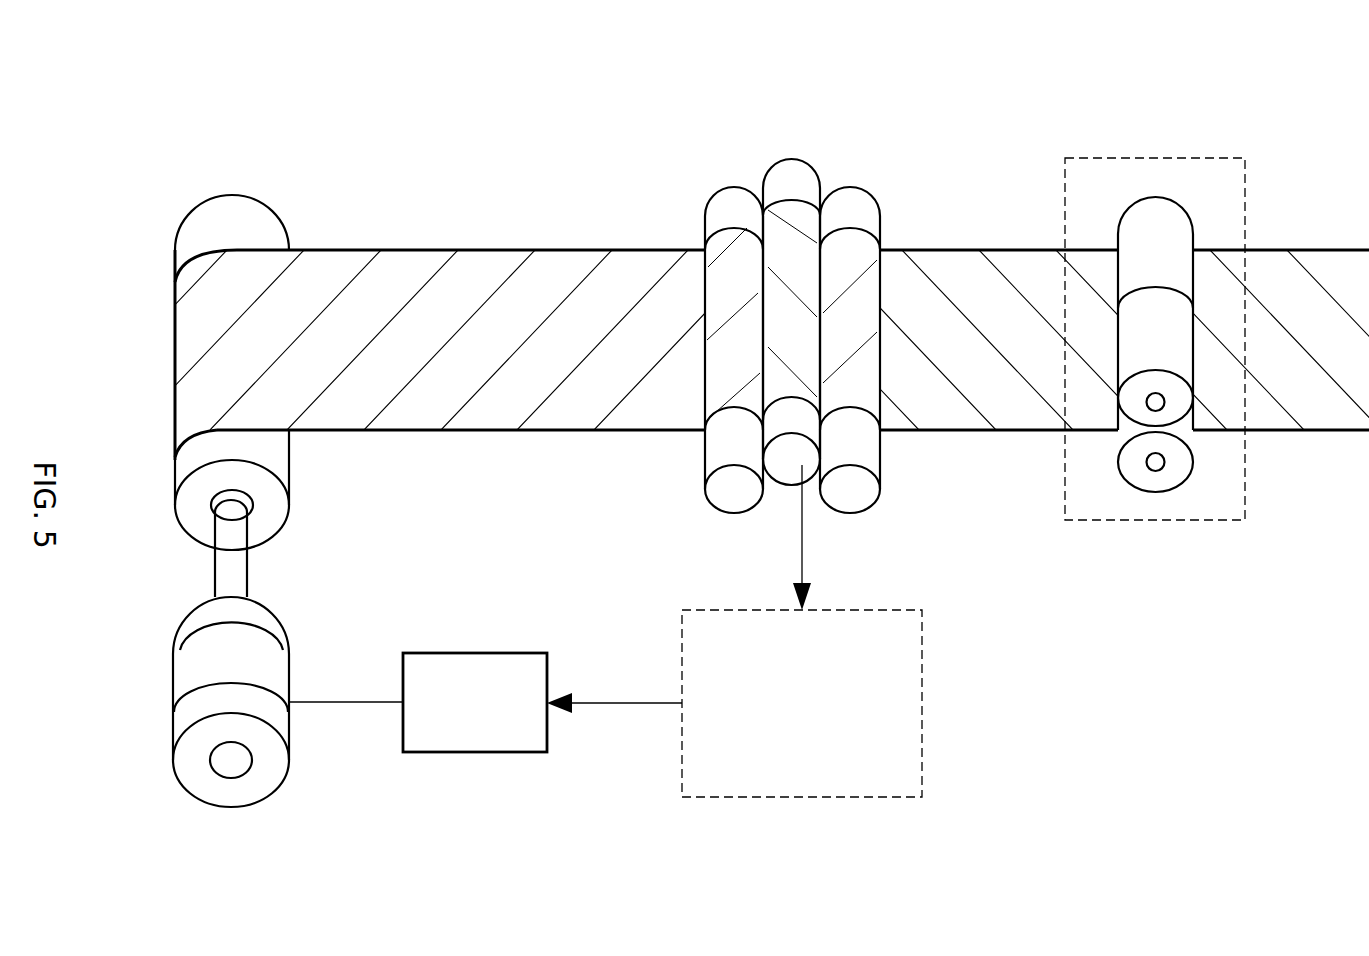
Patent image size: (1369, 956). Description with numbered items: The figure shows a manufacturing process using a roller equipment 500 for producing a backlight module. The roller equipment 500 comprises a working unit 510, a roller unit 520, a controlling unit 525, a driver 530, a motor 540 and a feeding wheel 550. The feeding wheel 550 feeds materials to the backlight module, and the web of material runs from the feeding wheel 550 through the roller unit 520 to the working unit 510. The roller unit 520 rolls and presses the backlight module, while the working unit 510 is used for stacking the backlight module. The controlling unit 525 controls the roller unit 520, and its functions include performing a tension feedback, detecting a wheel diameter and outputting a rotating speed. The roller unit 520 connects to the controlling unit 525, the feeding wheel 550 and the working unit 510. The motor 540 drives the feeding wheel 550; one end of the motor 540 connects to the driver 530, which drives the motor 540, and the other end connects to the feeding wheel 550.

The roller equipment 500 is at (243, 131).
The working unit 510 is at (1247, 205).
The roller unit 520 is at (793, 178).
The controlling unit 525 is at (920, 675).
The driver 530 is at (508, 663).
The motor 540 is at (268, 628).
The feeding wheel 550 is at (268, 215).